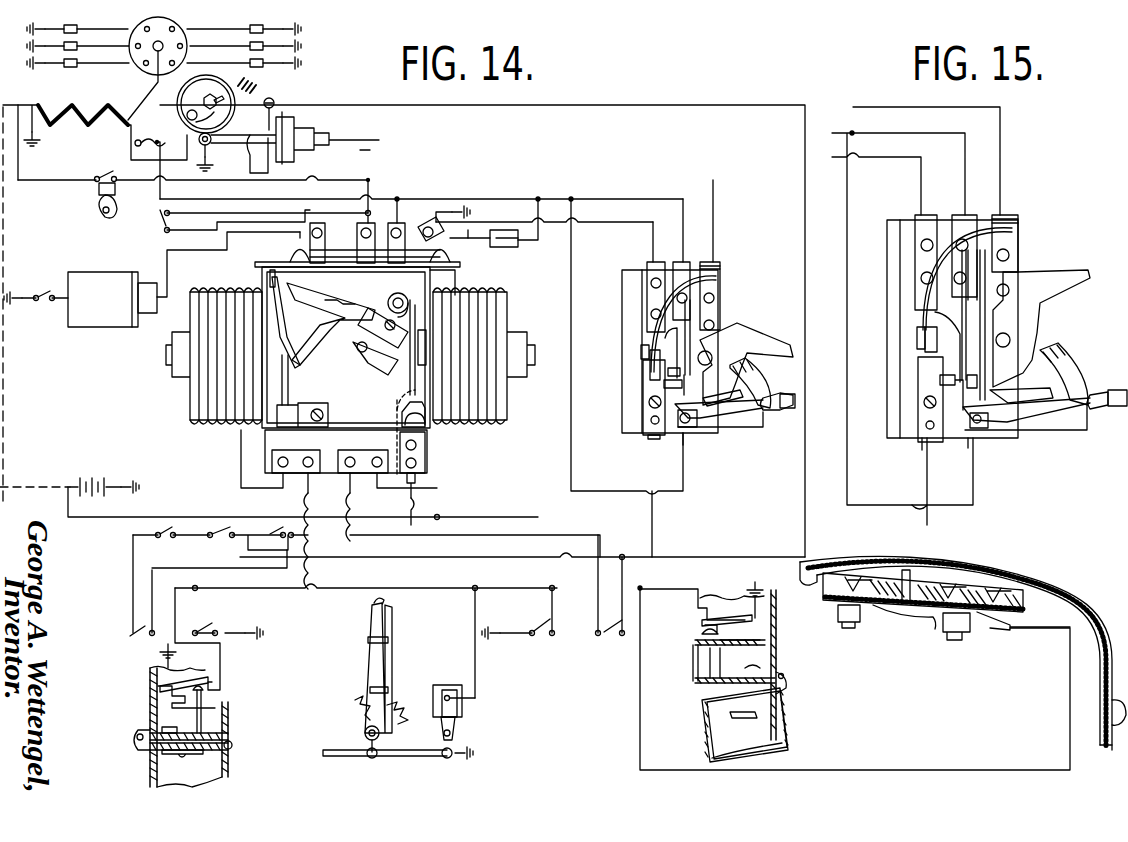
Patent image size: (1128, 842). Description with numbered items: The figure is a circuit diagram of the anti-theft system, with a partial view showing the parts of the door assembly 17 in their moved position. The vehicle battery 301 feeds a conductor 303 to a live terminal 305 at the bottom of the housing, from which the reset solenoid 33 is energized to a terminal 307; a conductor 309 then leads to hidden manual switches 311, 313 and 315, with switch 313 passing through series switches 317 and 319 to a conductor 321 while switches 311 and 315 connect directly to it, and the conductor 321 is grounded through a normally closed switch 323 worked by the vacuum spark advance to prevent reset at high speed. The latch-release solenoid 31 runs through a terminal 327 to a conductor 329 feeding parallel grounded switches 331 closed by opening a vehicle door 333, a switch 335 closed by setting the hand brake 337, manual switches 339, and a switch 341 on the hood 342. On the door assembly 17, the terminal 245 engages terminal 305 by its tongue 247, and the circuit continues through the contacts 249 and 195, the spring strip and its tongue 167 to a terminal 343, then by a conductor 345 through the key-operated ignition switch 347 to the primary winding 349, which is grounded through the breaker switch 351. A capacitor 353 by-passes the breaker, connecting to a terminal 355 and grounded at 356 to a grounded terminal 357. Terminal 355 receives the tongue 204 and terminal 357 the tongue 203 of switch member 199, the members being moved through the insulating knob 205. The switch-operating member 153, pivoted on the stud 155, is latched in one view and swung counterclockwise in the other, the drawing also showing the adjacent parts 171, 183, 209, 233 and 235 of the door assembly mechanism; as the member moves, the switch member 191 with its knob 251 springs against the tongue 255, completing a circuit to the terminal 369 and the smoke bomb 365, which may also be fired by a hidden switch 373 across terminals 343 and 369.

In FIG. 14, the door assembly 17 is at (720, 294).
In FIG. 15, the door assembly 17 is at (1028, 238).
In FIG. 14, the latch-release solenoid 31 is at (190, 397).
In FIG. 14, the reset solenoid 33 is at (507, 312).
In FIG. 14, the switch-operating member 153 is at (760, 337).
In FIG. 15, the switch-operating member 153 is at (1052, 277).
In FIG. 14, the stud 155 is at (712, 358).
In FIG. 15, the stud 155 is at (1012, 330).
In FIG. 14, the tongue 167 is at (716, 260).
In FIG. 15, the tongue 167 is at (1005, 215).
In FIG. 14, the toothed segment 171 is at (748, 396).
In FIG. 15, the toothed segment 171 is at (1065, 378).
In FIG. 14, the pivot pin 183 is at (714, 322).
In FIG. 15, the pivot pin 183 is at (1008, 286).
In FIG. 14, the switch member 191 is at (652, 296).
In FIG. 15, the switch member 191 is at (923, 264).
In FIG. 14, the contact 195 is at (686, 373).
In FIG. 15, the contact 195 is at (977, 378).
In FIG. 14, the switch member 199 is at (668, 372).
In FIG. 14, the tongue 203 is at (648, 262).
In FIG. 15, the tongue 203 is at (920, 215).
In FIG. 14, the tongue 204 is at (680, 262).
In FIG. 15, the tongue 204 is at (960, 215).
In FIG. 14, the insulating knob 205 is at (672, 332).
In FIG. 15, the insulating knob 205 is at (956, 325).
In FIG. 14, the pivot 209 is at (688, 430).
In FIG. 15, the pivot 209 is at (973, 429).
In FIG. 14, the link rod 233 is at (776, 408).
In FIG. 15, the link rod 233 is at (1096, 410).
In FIG. 14, the pivot 235 is at (696, 422).
In FIG. 15, the pivot 235 is at (992, 430).
In FIG. 14, the terminal member 245 is at (643, 412).
In FIG. 15, the terminal member 245 is at (918, 400).
In FIG. 14, the tongue 247 is at (650, 439).
In FIG. 15, the tongue 247 is at (922, 442).
In FIG. 14, the contact 249 is at (665, 382).
In FIG. 15, the contact 249 is at (955, 386).
In FIG. 14, the insulating knob 251 is at (640, 348).
In FIG. 15, the insulating knob 251 is at (914, 325).
In FIG. 14, the tongue 255 is at (650, 354).
In FIG. 15, the tongue 255 is at (916, 343).
In FIG. 14, the battery 301 is at (82, 468).
In FIG. 14, the conductor 303 is at (122, 516).
In FIG. 15, the conductor 303 is at (929, 487).
In FIG. 14, the terminal 305 is at (430, 443).
In FIG. 14, the terminal 307 is at (370, 470).
In FIG. 14, the conductor 309 is at (353, 526).
In FIG. 14, the switch 311 is at (220, 539).
In FIG. 14, the switch 313 is at (139, 640).
In FIG. 14, the switch 315 is at (612, 642).
In FIG. 14, the switch 317 is at (168, 540).
In FIG. 14, the switch 319 is at (225, 540).
In FIG. 14, the conductor 321 is at (382, 105).
In FIG. 14, the normally closed switch 323 is at (252, 158).
In FIG. 14, the terminal 327 is at (282, 453).
In FIG. 14, the conductor 329 is at (350, 588).
In FIG. 14, the switch 331 is at (219, 681).
In FIG. 14, the vehicle door 333 is at (150, 773).
In FIG. 14, the switch 335 is at (458, 721).
In FIG. 14, the hand brake 337 is at (385, 676).
In FIG. 14, the switch 339 is at (216, 626).
In FIG. 14, the switch 341 is at (932, 635).
In FIG. 14, the hood 342 is at (985, 572).
In FIG. 14, the terminal 343 is at (360, 238).
In FIG. 14, the conductor 345 is at (313, 180).
In FIG. 14, the key-operated ignition switch 347 is at (99, 190).
In FIG. 14, the primary winding 349 is at (42, 99).
In FIG. 14, the breaker switch 351 is at (235, 102).
In FIG. 14, the capacitor 353 is at (500, 247).
In FIG. 14, the terminal 355 is at (376, 213).
In FIG. 14, the ground connection 356 is at (468, 238).
In FIG. 14, the grounded terminal 357 is at (418, 225).
In FIG. 14, the smoke bomb 365 is at (152, 279).
In FIG. 14, the terminal 369 is at (295, 245).
In FIG. 14, the hidden manual control switch 373 is at (160, 208).